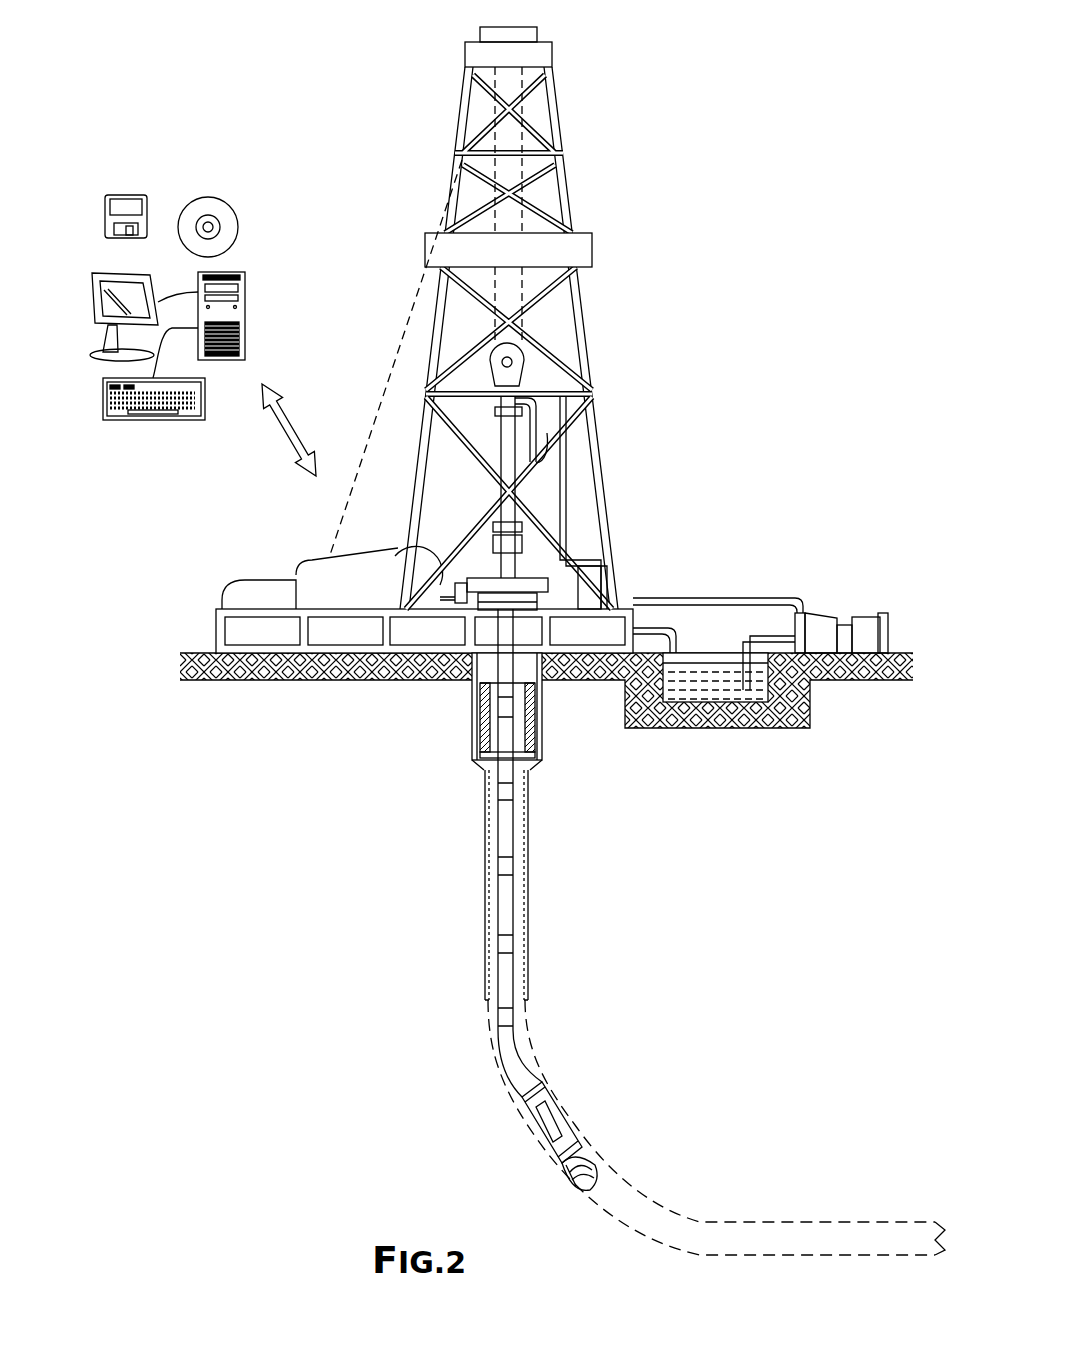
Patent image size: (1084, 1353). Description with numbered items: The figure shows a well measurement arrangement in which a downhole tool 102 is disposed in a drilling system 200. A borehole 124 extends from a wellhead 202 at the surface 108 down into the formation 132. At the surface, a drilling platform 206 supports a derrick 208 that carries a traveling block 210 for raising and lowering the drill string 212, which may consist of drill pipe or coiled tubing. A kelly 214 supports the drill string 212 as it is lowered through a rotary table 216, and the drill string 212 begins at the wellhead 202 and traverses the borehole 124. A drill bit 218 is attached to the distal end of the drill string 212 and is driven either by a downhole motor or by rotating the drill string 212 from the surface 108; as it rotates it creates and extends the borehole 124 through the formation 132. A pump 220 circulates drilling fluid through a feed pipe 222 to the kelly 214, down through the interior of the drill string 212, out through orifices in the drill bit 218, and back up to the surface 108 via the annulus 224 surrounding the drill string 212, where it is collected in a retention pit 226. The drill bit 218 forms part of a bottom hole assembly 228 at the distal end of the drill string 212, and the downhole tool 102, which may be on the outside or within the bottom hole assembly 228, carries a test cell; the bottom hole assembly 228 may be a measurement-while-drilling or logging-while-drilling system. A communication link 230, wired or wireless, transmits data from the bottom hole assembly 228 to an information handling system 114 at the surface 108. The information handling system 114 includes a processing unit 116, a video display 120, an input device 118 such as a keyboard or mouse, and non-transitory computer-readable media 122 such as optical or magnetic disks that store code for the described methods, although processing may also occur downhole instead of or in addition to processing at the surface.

The drilling system 200 is at (768, 134).
The derrick 208 is at (562, 152).
The traveling block 210 is at (528, 352).
The kelly 214 is at (510, 435).
The rotary table 216 is at (528, 577).
The wellhead 202 is at (555, 595).
The feed pipe 222 is at (735, 597).
The pump 220 is at (812, 613).
The surface 108 is at (898, 653).
The drilling platform 206 is at (216, 629).
The retention pit 226 is at (718, 692).
The annulus 224 is at (485, 798).
The drill string 212 is at (514, 848).
The borehole 124 is at (529, 878).
The formation 132 is at (799, 1008).
The downhole tool 102 is at (555, 1120).
The bottom hole assembly 228 is at (516, 1114).
The drill bit 218 is at (600, 1170).
The non-transitory computer-readable media 122 is at (125, 195).
The information handling system 114 is at (278, 209).
The video display 120 is at (90, 282).
The processing unit 116 is at (245, 292).
The input device 118 is at (143, 420).
The communication link 230 is at (288, 412).